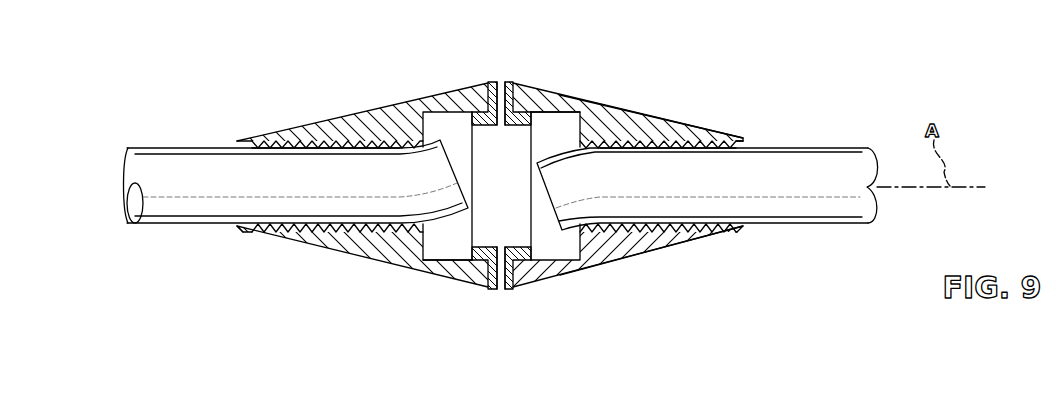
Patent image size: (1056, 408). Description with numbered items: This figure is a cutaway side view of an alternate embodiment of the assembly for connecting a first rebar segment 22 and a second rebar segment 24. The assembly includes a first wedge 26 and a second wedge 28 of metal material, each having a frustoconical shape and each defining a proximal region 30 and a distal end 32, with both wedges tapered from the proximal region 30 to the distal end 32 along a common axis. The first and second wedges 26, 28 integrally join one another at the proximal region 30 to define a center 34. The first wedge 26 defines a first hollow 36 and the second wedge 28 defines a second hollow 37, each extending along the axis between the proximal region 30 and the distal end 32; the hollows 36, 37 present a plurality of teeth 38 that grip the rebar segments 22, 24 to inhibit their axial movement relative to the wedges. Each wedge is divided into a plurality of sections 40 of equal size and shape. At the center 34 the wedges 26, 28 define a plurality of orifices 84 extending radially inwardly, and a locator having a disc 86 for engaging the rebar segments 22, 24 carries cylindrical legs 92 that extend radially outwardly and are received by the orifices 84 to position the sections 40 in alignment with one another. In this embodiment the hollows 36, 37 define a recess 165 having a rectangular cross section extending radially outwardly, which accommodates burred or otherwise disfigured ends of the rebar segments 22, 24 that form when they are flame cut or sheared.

The first rebar segment 22 is at (182, 210).
The second rebar segment 24 is at (788, 207).
The first wedge 26 is at (283, 126).
The second wedge 28 is at (676, 116).
The proximal region 30 is at (385, 115).
The distal end 32 is at (252, 142).
The center 34 is at (497, 291).
The first hollow 36 is at (292, 148).
The second hollow 37 is at (718, 148).
The teeth 38 is at (330, 238).
The sections 40 is at (692, 130).
The orifices 84 is at (504, 82).
The disc 86 is at (539, 141).
The legs 92 is at (485, 93).
The recess 165 is at (565, 113).